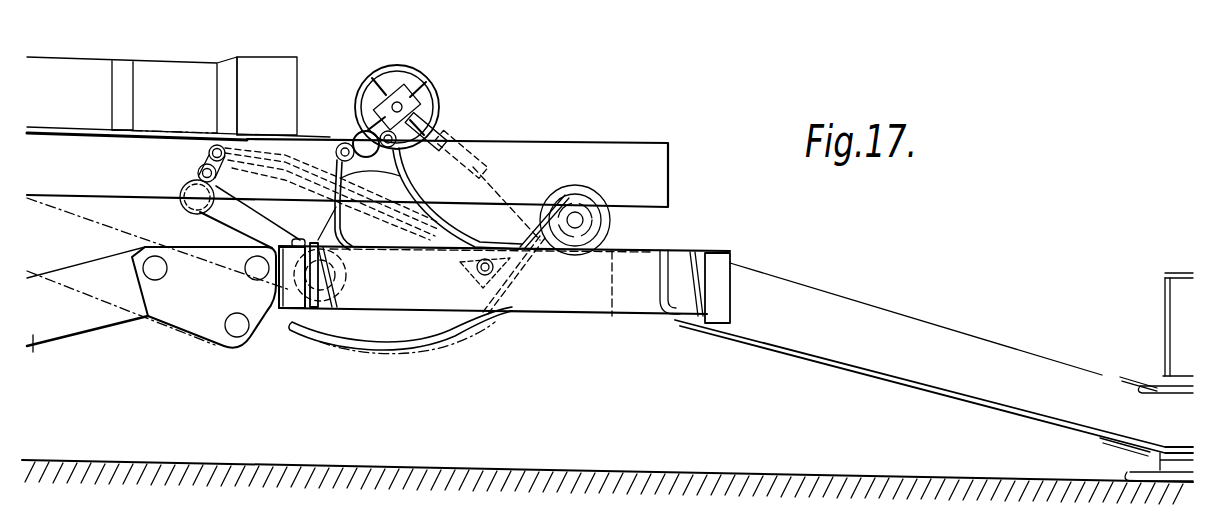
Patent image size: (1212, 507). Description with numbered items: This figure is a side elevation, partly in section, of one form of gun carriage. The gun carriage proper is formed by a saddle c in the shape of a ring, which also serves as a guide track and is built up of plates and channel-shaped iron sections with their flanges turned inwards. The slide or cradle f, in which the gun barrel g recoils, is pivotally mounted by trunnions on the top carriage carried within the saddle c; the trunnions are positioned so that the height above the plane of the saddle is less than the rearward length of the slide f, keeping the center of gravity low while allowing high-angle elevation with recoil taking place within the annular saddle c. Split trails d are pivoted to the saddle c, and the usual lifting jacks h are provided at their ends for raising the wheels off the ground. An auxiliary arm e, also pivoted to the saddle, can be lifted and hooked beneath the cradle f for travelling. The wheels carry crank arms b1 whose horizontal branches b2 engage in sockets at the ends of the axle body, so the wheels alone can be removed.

The gun barrel g is at (285, 77).
The cradle f is at (522, 150).
The crank arms b1 is at (210, 222).
The horizontal branches b2 is at (352, 280).
The saddle c is at (292, 302).
The split trails d is at (934, 332).
The arm e is at (87, 308).
The lifting jacks h is at (1173, 315).